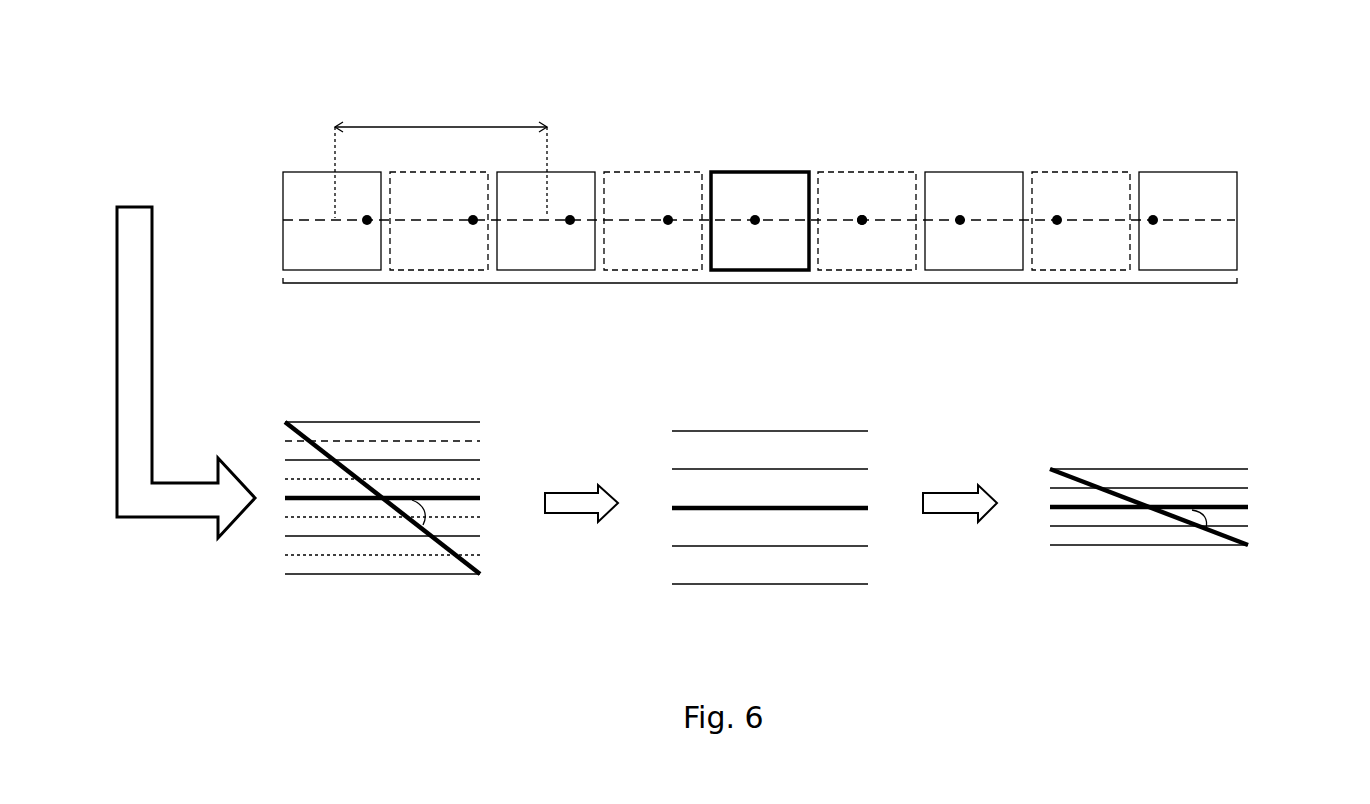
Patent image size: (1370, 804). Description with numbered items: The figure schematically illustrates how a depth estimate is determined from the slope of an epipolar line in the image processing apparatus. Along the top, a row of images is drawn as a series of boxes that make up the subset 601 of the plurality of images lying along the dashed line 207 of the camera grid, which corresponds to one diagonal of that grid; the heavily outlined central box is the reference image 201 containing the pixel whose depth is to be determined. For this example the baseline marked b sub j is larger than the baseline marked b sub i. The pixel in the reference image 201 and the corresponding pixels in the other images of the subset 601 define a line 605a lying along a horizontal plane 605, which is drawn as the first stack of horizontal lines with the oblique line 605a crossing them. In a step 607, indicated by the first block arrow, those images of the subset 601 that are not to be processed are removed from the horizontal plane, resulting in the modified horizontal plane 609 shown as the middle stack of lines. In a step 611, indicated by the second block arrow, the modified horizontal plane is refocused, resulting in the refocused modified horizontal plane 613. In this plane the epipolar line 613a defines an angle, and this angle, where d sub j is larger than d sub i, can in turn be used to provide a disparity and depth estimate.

The reference image 201 is at (763, 172).
The dashed line 207 is at (882, 218).
The subset of the plurality of images 601 is at (760, 283).
The horizontal plane 605 is at (494, 406).
The line 605a is at (346, 480).
The step 607 is at (581, 490).
The modified horizontal plane 609 is at (863, 414).
The step 611 is at (960, 490).
The refocused modified horizontal plane 613 is at (1251, 443).
The epipolar line 613a is at (1103, 494).